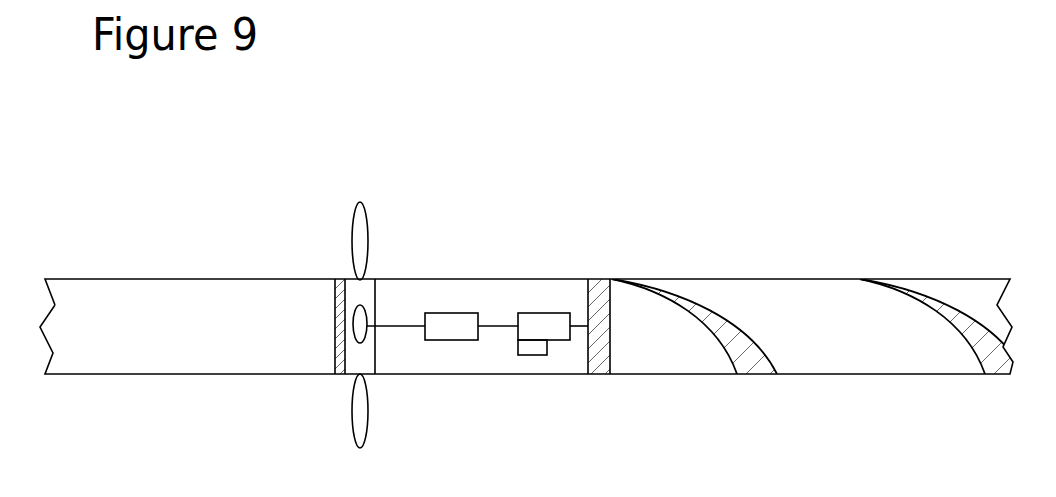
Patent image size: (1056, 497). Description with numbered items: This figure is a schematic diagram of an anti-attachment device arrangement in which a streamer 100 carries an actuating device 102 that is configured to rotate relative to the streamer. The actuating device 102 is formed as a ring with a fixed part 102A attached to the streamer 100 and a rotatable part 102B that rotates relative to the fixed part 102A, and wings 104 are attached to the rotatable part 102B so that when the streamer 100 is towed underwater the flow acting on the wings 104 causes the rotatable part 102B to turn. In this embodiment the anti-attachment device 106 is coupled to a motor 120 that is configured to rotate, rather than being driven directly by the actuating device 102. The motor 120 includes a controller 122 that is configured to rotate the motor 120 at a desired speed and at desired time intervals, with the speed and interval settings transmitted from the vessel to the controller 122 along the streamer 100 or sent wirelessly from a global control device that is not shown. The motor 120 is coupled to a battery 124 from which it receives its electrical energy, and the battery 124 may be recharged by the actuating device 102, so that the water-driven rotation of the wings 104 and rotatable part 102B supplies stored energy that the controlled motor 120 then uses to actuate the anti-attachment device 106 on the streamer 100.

The streamer 100 is at (782, 298).
The actuating device 102 is at (369, 313).
The fixed part 102A is at (333, 331).
The rotatable part 102B is at (367, 353).
The wings 104 is at (358, 228).
The anti-attachment device 106 is at (668, 288).
The motor 120 is at (535, 317).
The controller 122 is at (532, 350).
The battery 124 is at (452, 318).